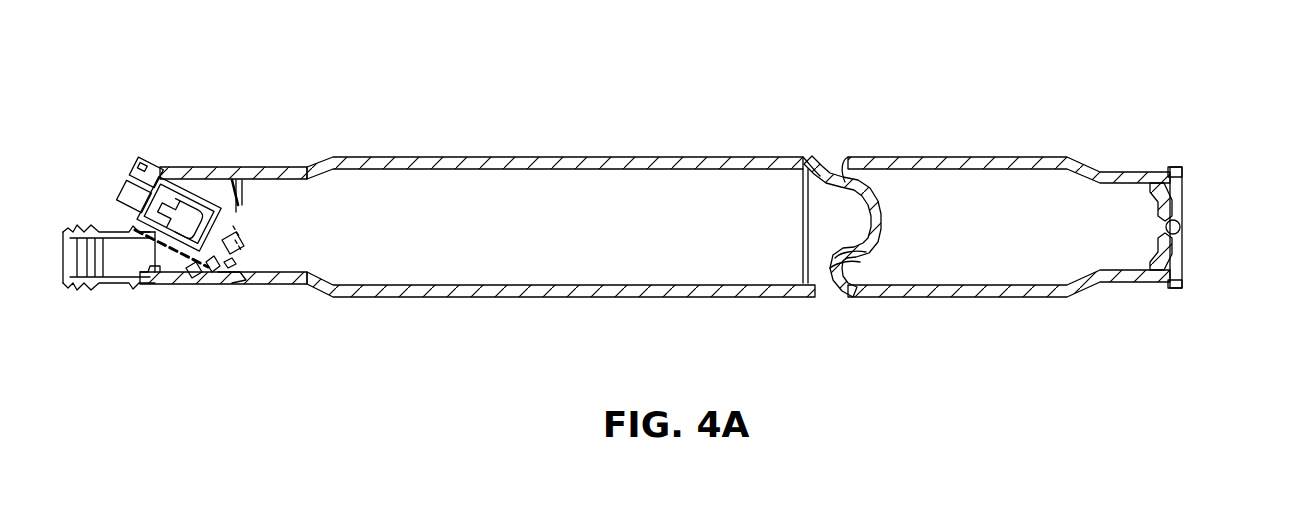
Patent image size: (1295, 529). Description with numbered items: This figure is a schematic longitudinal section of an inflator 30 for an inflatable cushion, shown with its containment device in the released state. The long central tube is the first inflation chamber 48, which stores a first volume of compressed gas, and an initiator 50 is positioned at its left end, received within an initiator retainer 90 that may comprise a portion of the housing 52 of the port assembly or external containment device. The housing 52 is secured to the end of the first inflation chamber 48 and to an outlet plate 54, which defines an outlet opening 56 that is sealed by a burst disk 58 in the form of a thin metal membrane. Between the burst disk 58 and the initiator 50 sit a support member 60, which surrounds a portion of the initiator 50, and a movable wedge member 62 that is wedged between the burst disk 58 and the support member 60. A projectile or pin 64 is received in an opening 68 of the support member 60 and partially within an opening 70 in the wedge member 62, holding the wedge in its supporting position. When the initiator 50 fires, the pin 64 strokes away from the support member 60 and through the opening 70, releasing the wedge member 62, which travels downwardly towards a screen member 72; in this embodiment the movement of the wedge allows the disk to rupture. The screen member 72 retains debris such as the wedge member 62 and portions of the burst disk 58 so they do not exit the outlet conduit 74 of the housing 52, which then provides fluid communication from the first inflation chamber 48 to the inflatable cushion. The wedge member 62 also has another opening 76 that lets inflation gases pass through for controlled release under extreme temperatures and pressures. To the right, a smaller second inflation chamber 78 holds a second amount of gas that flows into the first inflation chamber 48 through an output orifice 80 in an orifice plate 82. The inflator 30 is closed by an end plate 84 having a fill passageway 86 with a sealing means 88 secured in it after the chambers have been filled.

The inflator 30 is at (786, 96).
The first inflation chamber 48 is at (636, 170).
The initiator 50 is at (178, 196).
The housing 52 is at (185, 280).
The outlet plate 54 is at (244, 290).
The outlet opening 56 is at (232, 268).
The burst disk 58 is at (248, 212).
The support member 60 is at (216, 190).
The wedge member 62 is at (240, 236).
The pin 64 is at (217, 272).
The opening 68 is at (242, 200).
The opening 70 is at (238, 257).
The screen member 72 is at (172, 280).
The outlet conduit 74 is at (98, 278).
The opening 76 is at (193, 280).
The second inflation chamber 78 is at (978, 283).
The output orifice 80 is at (884, 224).
The orifice plate 82 is at (866, 268).
The end plate 84 is at (1183, 265).
The fill passageway 86 is at (1162, 232).
The sealing means 88 is at (1182, 228).
The initiator retainer 90 is at (152, 164).